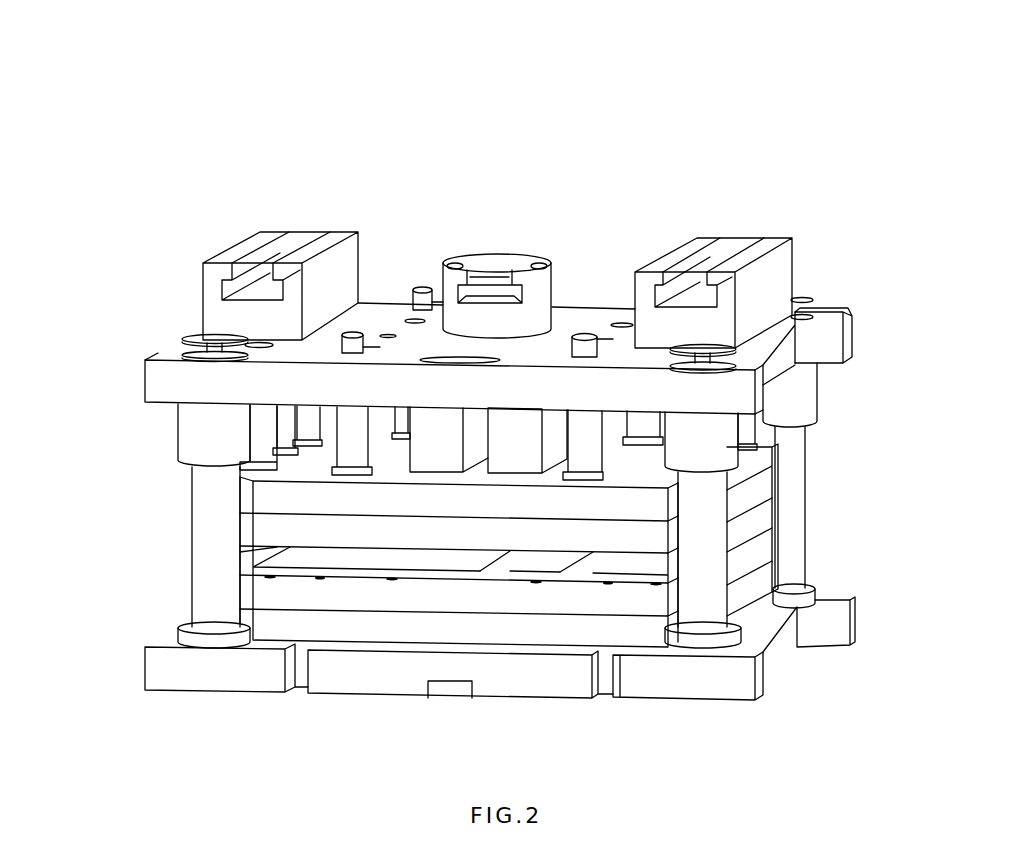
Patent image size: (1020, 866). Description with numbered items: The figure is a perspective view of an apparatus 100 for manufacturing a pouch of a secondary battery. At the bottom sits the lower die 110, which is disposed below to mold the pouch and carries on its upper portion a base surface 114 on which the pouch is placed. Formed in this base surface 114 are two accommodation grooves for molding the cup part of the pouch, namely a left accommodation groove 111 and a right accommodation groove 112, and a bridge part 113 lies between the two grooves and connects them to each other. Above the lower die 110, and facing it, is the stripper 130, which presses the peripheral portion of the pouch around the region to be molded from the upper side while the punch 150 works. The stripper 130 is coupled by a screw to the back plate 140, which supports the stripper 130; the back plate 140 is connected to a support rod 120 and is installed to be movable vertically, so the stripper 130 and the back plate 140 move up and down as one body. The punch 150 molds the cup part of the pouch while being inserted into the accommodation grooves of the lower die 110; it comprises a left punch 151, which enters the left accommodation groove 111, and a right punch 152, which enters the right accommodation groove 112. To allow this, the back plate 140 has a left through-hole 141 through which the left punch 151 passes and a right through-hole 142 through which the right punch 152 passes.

The apparatus for manufacturing a pouch of a secondary battery 100 is at (220, 71).
The lower die 110 is at (270, 622).
The left accommodation groove 111 is at (423, 557).
The right accommodation groove 112 is at (545, 562).
The bridge part 113 is at (480, 555).
The base surface 114 is at (620, 563).
The support rod 120 is at (352, 425).
The stripper 130 is at (643, 537).
The back plate 140 is at (643, 505).
The left through-hole 141 is at (425, 480).
The right through-hole 142 is at (524, 472).
The punch 150 is at (718, 19).
The left punch 151 is at (432, 415).
The right punch 152 is at (524, 422).